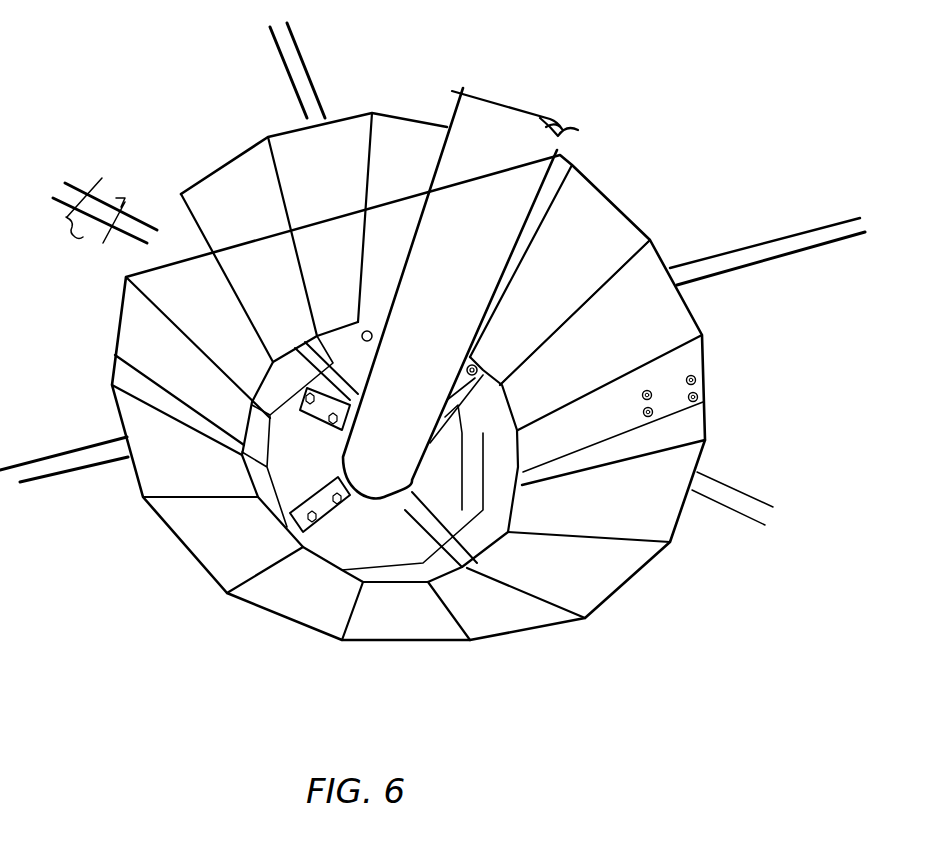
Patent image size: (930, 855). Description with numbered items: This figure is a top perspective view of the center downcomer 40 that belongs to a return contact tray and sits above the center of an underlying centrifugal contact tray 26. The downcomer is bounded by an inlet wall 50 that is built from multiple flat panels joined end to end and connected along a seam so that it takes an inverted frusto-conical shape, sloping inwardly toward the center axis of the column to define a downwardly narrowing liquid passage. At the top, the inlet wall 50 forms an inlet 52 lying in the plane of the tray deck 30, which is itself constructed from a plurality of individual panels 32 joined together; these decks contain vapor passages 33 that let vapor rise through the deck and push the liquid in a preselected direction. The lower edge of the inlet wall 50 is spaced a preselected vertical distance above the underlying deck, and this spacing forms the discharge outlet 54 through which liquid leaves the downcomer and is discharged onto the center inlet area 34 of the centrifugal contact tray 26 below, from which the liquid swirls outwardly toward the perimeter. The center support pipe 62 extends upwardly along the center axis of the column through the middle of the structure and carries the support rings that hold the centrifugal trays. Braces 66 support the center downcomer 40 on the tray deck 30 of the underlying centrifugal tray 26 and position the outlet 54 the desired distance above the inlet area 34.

The centrifugal contact tray 26 is at (160, 178).
The tray deck 30 is at (105, 225).
The panel 32 is at (71, 208).
The vapor passage 33 is at (369, 330).
The inlet area 34 is at (474, 430).
The center downcomer 40 is at (652, 219).
The inlet wall 50 is at (681, 323).
The inlet 52 is at (598, 220).
The discharge outlet 54 is at (516, 460).
The center support pipe 62 is at (545, 130).
The brace 66 is at (330, 418).